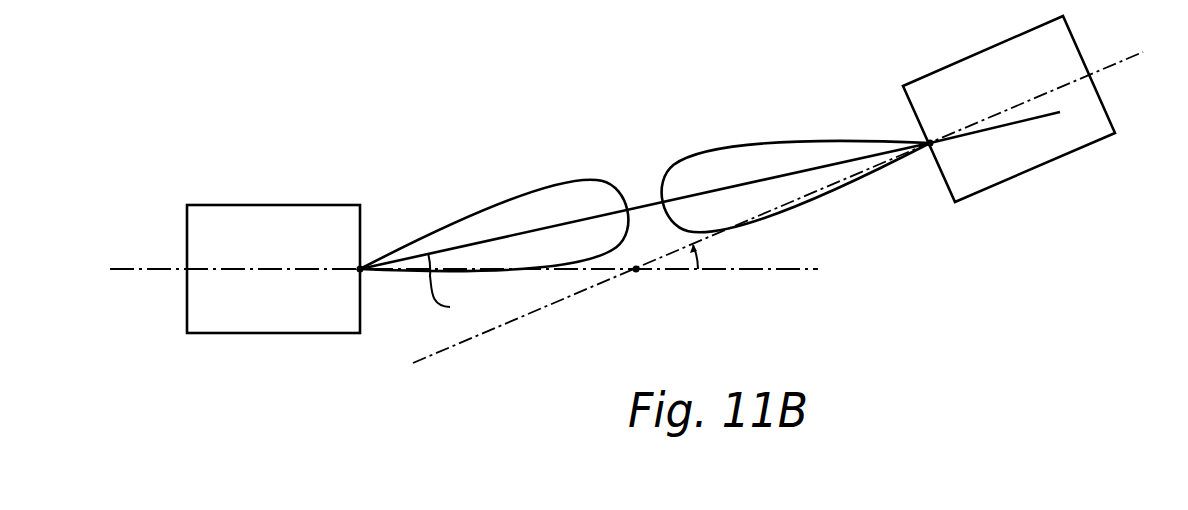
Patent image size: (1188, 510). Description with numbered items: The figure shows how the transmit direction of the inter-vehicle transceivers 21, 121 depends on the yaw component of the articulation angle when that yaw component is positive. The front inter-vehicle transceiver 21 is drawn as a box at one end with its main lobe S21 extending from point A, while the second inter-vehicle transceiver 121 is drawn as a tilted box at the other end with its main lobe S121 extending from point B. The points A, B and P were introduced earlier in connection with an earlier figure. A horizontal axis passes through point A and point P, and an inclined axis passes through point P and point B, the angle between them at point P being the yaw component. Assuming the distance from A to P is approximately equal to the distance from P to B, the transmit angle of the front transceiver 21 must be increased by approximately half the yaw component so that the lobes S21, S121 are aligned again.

The front inter-vehicle transceiver 21 is at (273, 333).
The inter-vehicle transceiver 121 is at (1072, 152).
The main lobe S21 is at (550, 190).
The main lobe S121 is at (763, 137).
The point A is at (369, 290).
The point B is at (924, 173).
The point P is at (635, 285).